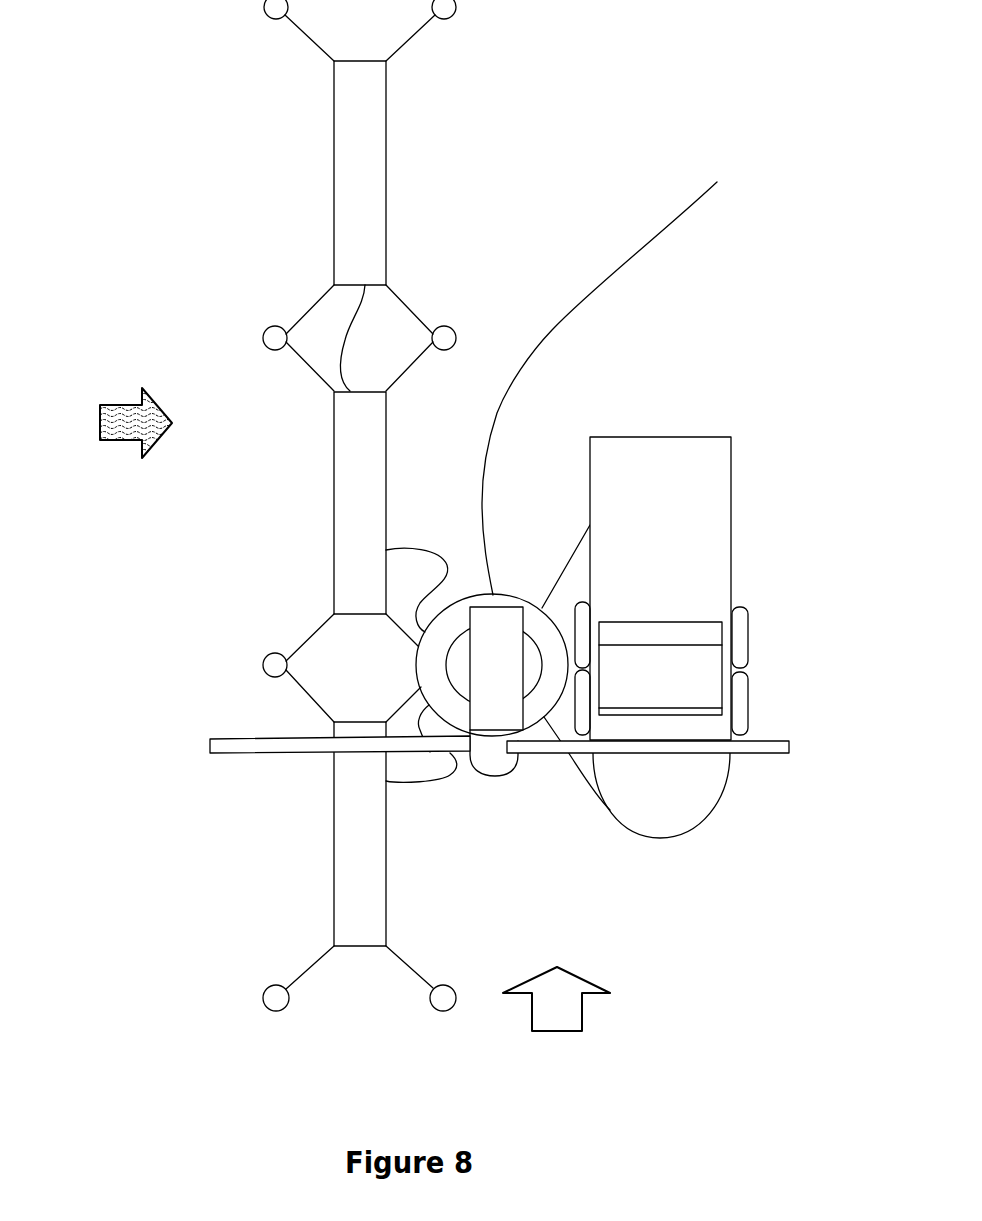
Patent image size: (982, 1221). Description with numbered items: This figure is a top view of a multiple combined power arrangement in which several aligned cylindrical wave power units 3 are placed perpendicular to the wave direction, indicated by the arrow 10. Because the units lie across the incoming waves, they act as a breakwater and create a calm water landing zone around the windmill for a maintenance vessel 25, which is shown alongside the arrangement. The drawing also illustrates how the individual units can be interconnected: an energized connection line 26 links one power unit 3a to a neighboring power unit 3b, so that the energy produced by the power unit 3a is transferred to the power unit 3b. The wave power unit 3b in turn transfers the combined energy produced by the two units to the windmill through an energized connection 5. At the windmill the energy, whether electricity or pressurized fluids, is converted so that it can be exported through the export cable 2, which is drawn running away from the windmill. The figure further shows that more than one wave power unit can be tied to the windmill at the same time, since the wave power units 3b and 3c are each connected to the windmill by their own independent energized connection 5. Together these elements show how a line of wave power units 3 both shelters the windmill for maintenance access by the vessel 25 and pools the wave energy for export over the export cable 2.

The cylindrical wave power unit 3 is at (390, 505).
The power unit 3a is at (340, 163).
The power unit 3b is at (345, 498).
The wave power unit 3c is at (346, 853).
The energized connection line 26 is at (363, 307).
The export cable 2 is at (523, 368).
The energized connection 5 is at (410, 542).
The maintenance vessel 25 is at (760, 516).
The wave direction arrow 10 is at (136, 414).